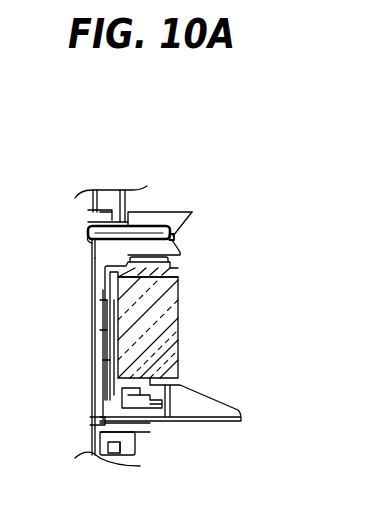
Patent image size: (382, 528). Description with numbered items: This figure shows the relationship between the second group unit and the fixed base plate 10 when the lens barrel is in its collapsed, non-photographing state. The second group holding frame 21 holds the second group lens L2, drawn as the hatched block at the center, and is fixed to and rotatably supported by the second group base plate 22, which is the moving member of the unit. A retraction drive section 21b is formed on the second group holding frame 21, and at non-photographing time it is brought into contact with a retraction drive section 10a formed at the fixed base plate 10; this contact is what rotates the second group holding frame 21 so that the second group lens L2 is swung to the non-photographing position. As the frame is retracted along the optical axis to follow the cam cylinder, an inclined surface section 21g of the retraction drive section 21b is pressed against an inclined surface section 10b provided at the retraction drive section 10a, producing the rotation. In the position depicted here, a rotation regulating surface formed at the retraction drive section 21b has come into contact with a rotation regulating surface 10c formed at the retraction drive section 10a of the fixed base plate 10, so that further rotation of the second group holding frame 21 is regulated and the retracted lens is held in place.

The fixed base plate 10 is at (92, 213).
The retraction drive section 10a is at (110, 258).
The inclined surface section 10b is at (172, 247).
The rotation regulating surface 10c is at (128, 236).
The second group holding frame 21 is at (135, 272).
The retraction drive section 21b is at (153, 232).
The inclined surface section 21g is at (88, 234).
The second group base plate 22 is at (127, 408).
The second group lens L2 is at (158, 327).